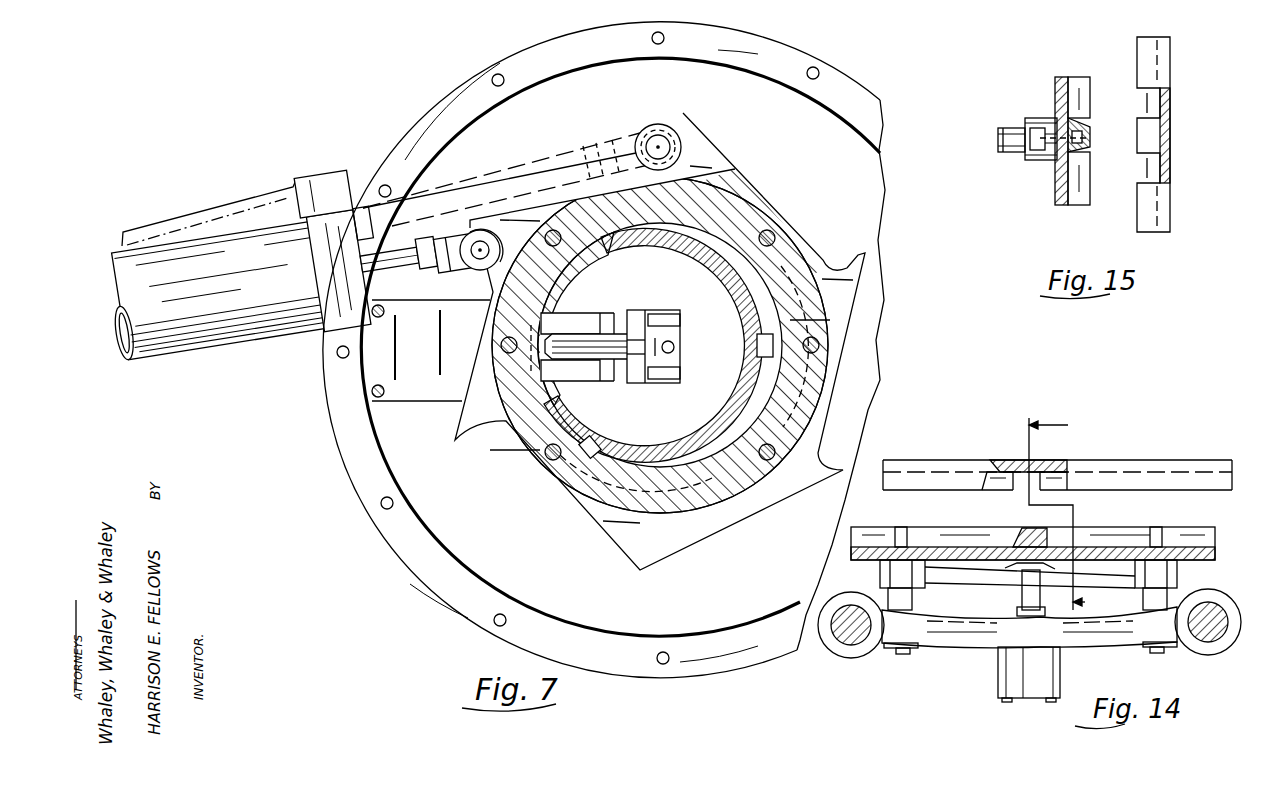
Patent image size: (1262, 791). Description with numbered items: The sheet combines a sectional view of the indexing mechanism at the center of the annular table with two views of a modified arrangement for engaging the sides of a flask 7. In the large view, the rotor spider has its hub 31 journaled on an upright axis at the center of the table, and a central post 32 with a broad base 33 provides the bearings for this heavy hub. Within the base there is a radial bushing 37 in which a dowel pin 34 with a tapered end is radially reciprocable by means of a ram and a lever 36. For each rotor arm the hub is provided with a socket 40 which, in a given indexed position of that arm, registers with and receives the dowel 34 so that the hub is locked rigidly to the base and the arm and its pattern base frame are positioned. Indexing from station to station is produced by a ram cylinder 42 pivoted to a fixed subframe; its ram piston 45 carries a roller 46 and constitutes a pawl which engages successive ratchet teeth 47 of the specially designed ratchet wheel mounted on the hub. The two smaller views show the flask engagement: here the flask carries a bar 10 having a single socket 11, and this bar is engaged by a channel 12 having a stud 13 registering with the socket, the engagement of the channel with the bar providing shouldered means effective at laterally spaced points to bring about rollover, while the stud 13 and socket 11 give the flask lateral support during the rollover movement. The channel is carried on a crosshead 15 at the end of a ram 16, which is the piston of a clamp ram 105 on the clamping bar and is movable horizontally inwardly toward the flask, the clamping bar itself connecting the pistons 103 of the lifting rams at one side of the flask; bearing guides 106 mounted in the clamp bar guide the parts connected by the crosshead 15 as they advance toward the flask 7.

In FIG. 15, the flask 7 is at (1172, 50).
In FIG. 14, the flask 7 is at (1160, 461).
In FIG. 15, the bar 10 is at (1142, 157).
In FIG. 14, the bar 10 is at (992, 488).
In FIG. 15, the socket 11 is at (1140, 97).
In FIG. 14, the socket 11 is at (1018, 488).
In FIG. 15, the channel 12 is at (1089, 156).
In FIG. 14, the channel 12 is at (1112, 530).
In FIG. 15, the stud 13 is at (1088, 136).
In FIG. 14, the stud 13 is at (1027, 532).
In FIG. 15, the crosshead 15 is at (1042, 156).
In FIG. 14, the crosshead 15 is at (1066, 592).
In FIG. 15, the ram 16 is at (1014, 130).
In FIG. 14, the ram 16 is at (1022, 598).
In FIG. 7, the hub 31 is at (534, 436).
In FIG. 7, the central post 32 is at (686, 256).
In FIG. 7, the base 33 is at (875, 195).
In FIG. 7, the dowel pin 34 is at (606, 382).
In FIG. 7, the lever 36 is at (668, 328).
In FIG. 7, the radial bushing 37 is at (598, 322).
In FIG. 7, the socket 40 is at (760, 344).
In FIG. 7, the ram cylinder 42 is at (224, 344).
In FIG. 7, the ram piston 45 is at (397, 270).
In FIG. 7, the roller 46 is at (478, 270).
In FIG. 7, the ratchet teeth 47 is at (676, 128).
In FIG. 14, the pistons 103 is at (855, 640).
In FIG. 14, the clamp ram 105 is at (1000, 673).
In FIG. 15, the bearing guides 106 is at (1003, 152).
In FIG. 14, the bearing guides 106 is at (915, 595).